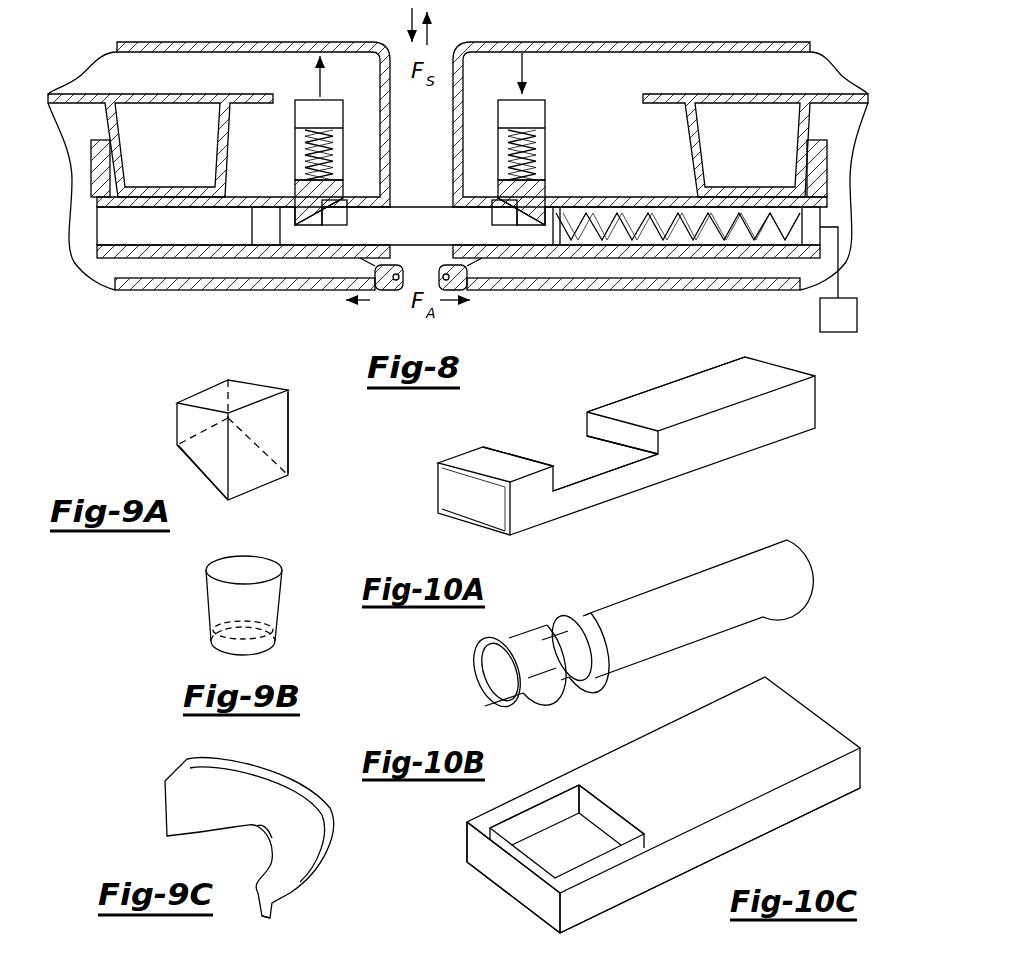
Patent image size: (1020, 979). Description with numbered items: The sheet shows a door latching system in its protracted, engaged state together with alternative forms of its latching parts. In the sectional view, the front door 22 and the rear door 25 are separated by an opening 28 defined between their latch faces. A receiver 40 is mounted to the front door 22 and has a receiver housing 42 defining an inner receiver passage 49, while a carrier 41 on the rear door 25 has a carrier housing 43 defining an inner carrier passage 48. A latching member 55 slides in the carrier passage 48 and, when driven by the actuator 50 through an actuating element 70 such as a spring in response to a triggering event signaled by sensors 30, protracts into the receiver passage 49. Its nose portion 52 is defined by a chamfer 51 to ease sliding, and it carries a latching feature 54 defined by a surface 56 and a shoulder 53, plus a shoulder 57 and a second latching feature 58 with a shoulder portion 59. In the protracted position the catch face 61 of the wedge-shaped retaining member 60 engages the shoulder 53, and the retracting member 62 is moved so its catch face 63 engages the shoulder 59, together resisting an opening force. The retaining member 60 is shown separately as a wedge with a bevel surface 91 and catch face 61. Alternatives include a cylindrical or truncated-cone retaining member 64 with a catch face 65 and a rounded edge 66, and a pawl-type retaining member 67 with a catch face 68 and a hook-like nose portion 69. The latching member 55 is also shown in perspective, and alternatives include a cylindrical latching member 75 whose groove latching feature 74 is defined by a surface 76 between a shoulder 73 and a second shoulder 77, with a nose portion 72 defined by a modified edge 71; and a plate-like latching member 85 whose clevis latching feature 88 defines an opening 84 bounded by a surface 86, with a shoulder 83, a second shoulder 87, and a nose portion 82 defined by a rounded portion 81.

In FIG. 8, the front door 22 is at (90, 66).
In FIG. 8, the rear door 25 is at (835, 66).
In FIG. 8, the opening 28 is at (412, 127).
In FIG. 8, the sensors 30 is at (828, 329).
In FIG. 8, the receiver 40 is at (92, 220).
In FIG. 8, the carrier 41 is at (816, 213).
In FIG. 8, the receiver housing 42 is at (92, 168).
In FIG. 8, the carrier housing 43 is at (827, 172).
In FIG. 8, the inner carrier passage 48 is at (752, 240).
In FIG. 8, the inner receiver passage 49 is at (168, 240).
In FIG. 8, the actuator 50 is at (330, 100).
In FIG. 10A, the chamfer 51 is at (458, 516).
In FIG. 10A, the nose portion 52 is at (445, 490).
In FIG. 8, the shoulder 53 is at (292, 232).
In FIG. 10A, the shoulder 53 is at (470, 455).
In FIG. 8, the latching feature 54 is at (326, 225).
In FIG. 10A, the latching feature 54 is at (556, 447).
In FIG. 8, the latching member 55 is at (425, 216).
In FIG. 10A, the latching member 55 is at (575, 398).
In FIG. 10A, the surface 56 is at (627, 438).
In FIG. 10A, the shoulder 57 is at (620, 417).
In FIG. 8, the second latching feature 58 is at (510, 226).
In FIG. 8, the shoulder portion 59 is at (553, 226).
In FIG. 8, the retaining member 60 is at (296, 181).
In FIG. 9A, the retaining member 60 is at (165, 385).
In FIG. 8, the catch face 61 is at (297, 210).
In FIG. 9A, the catch face 61 is at (283, 430).
In FIG. 8, the retracting member 62 is at (547, 186).
In FIG. 8, the catch face 63 is at (547, 212).
In FIG. 9B, the retaining member 64 is at (185, 600).
In FIG. 9B, the catch face 65 is at (268, 610).
In FIG. 9B, the rounded edge 66 is at (218, 657).
In FIG. 9C, the retaining member 67 is at (150, 788).
In FIG. 9C, the catch face 68 is at (255, 828).
In FIG. 9C, the nose portion 69 is at (275, 912).
In FIG. 8, the actuating element 70 is at (328, 146).
In FIG. 10B, the modified edge 71 is at (507, 710).
In FIG. 10B, the nose portion 72 is at (490, 674).
In FIG. 10B, the shoulder 73 is at (500, 634).
In FIG. 10B, the latching feature 74 is at (545, 633).
In FIG. 10B, the latching member 75 is at (752, 521).
In FIG. 10B, the surface 76 is at (583, 672).
In FIG. 10B, the second shoulder 77 is at (599, 615).
In FIG. 10C, the rounded portion 81 is at (462, 838).
In FIG. 10C, the nose portion 82 is at (512, 893).
In FIG. 10C, the shoulder 83 is at (500, 853).
In FIG. 10C, the opening 84 is at (552, 862).
In FIG. 10C, the latching member 85 is at (803, 671).
In FIG. 10C, the surface 86 is at (510, 823).
In FIG. 10C, the second shoulder 87 is at (597, 797).
In FIG. 10C, the latching feature 88 is at (633, 893).
In FIG. 9A, the bevel surface 91 is at (212, 484).